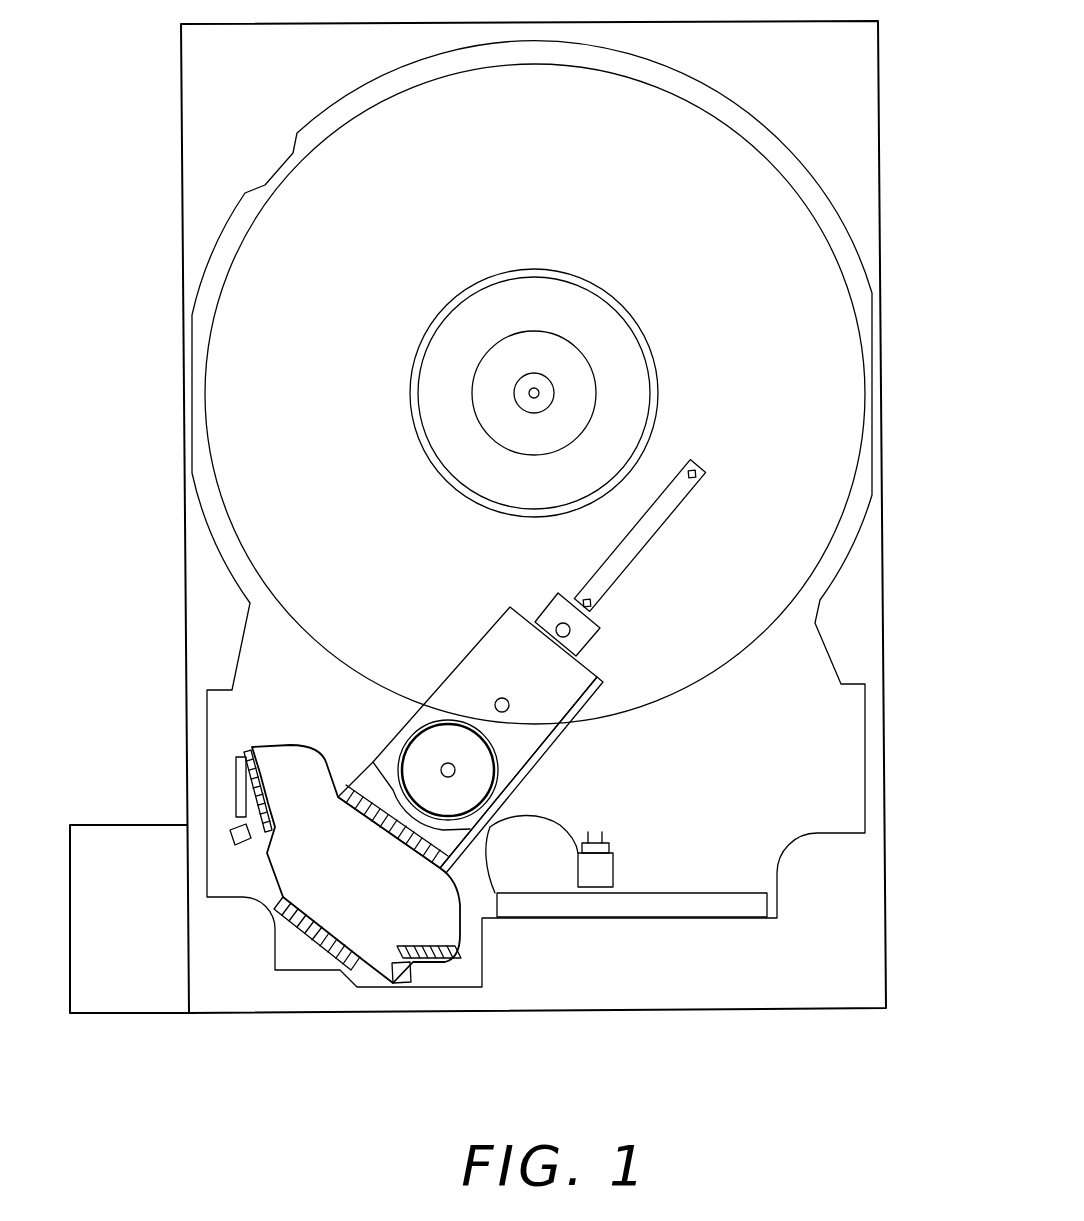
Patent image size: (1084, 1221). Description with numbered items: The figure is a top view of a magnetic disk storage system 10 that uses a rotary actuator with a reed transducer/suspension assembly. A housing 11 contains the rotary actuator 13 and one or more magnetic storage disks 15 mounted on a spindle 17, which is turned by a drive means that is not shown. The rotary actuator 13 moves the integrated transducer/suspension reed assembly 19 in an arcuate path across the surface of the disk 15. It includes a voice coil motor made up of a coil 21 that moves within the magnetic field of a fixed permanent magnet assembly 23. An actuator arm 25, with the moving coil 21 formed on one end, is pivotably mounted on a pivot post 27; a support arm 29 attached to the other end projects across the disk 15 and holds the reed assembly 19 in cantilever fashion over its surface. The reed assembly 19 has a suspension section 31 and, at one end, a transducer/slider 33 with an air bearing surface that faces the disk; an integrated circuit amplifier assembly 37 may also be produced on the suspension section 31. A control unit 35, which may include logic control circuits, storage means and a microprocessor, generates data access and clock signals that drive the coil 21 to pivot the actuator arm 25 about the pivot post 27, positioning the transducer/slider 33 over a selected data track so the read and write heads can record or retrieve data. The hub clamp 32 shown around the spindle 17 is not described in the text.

The magnetic disk storage system 10 is at (147, 634).
The housing 11 is at (873, 777).
The rotary actuator 13 is at (547, 792).
The magnetic storage disk 15 is at (832, 308).
The spindle 17 is at (540, 393).
The integrated transducer/suspension reed assembly 19 is at (712, 513).
The coil 21 is at (330, 955).
The permanent magnet assembly 23 is at (328, 907).
The actuator arm 25 is at (547, 725).
The pivot post 27 is at (448, 770).
The support arm 29 is at (550, 602).
The suspension section 31 is at (617, 570).
The hub clamp 32 is at (472, 472).
The transducer/slider 33 is at (697, 462).
The control unit 35 is at (129, 919).
The integrated circuit amplifier assembly 37 is at (595, 607).